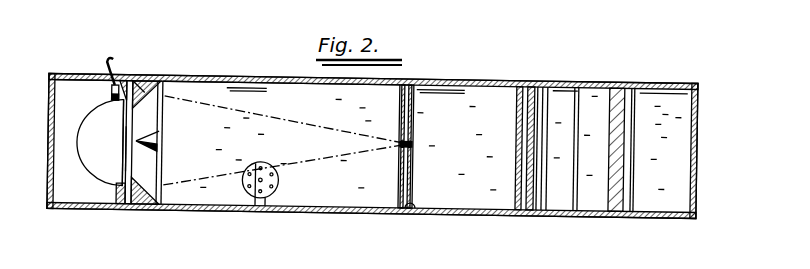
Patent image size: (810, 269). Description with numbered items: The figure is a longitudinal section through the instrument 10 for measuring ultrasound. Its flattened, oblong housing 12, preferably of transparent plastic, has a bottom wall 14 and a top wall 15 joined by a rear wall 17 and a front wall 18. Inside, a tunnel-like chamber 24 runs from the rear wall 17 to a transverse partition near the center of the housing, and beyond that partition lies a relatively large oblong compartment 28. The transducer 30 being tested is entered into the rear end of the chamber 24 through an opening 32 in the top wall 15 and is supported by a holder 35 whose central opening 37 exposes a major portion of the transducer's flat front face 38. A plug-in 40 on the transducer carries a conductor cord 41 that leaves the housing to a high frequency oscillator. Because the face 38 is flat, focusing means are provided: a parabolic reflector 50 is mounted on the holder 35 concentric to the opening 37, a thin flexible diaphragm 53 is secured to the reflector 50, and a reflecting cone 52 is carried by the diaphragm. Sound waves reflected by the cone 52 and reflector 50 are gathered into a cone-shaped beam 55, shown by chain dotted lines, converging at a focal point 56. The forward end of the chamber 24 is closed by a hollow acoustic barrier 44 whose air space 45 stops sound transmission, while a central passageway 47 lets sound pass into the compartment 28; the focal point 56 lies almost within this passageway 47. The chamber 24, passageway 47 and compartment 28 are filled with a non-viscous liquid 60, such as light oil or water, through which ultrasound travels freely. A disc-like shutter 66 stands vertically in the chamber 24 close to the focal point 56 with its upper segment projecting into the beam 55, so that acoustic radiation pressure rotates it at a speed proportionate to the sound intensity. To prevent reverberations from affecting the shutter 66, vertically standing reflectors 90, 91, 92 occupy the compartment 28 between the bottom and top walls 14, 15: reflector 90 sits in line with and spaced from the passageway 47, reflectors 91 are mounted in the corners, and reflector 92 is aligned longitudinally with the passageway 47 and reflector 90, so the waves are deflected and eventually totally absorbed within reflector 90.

The instrument 10 is at (256, 34).
The housing 12 is at (216, 73).
The bottom wall 14 is at (501, 210).
The top wall 15 is at (305, 75).
The rear wall 17 is at (49, 146).
The front wall 18 is at (699, 151).
The chamber 24 is at (333, 192).
The compartment 28 is at (462, 193).
The transducer 30 is at (103, 172).
The opening 32 is at (90, 74).
The holder 35 is at (126, 205).
The central opening 37 is at (125, 124).
The front face 38 is at (127, 148).
The plug-in 40 is at (113, 98).
The conductor cord 41 is at (112, 62).
The acoustic barrier 44 is at (417, 93).
The air space 45 is at (417, 195).
The passageway 47 is at (412, 145).
The parabolic reflector 50 is at (145, 103).
The reflecting cone 52 is at (167, 135).
The diaphragm 53 is at (165, 172).
The sound beam 55 is at (322, 143).
The focal point 56 is at (413, 140).
The sound-propagating liquid 60 is at (488, 95).
The shutter 66 is at (282, 178).
The sound reflector 90 is at (537, 90).
The sound reflector 91 is at (572, 97).
The sound reflector 92 is at (632, 107).